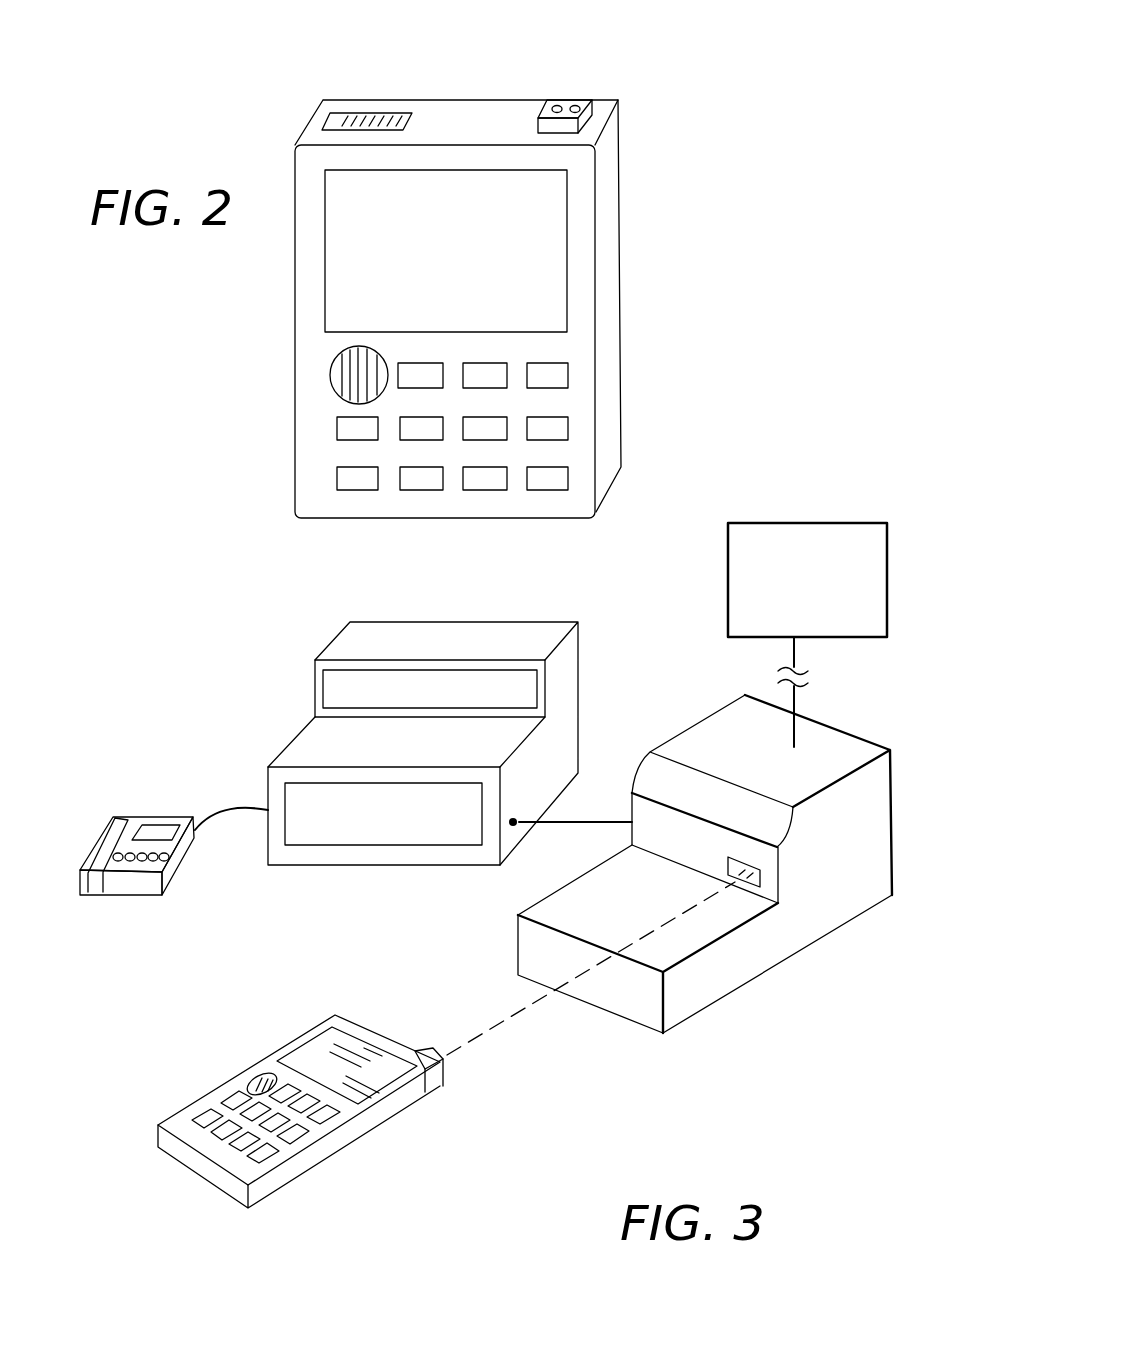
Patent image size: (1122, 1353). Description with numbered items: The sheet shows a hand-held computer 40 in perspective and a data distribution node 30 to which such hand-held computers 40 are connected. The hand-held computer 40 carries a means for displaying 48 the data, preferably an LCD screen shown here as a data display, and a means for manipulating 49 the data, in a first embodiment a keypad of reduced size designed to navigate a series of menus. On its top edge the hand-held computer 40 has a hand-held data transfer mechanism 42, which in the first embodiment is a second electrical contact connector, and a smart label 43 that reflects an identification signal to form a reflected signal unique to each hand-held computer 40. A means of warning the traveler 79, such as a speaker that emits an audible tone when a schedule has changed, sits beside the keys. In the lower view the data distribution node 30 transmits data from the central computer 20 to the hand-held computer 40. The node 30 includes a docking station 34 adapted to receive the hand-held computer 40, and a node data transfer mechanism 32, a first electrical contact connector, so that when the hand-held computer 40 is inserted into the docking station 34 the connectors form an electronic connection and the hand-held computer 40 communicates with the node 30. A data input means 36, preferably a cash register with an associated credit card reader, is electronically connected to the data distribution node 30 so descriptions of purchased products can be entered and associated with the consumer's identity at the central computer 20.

In FIG. 3, the central computer 20 is at (825, 523).
In FIG. 3, the data distribution node 30 is at (736, 864).
In FIG. 3, the node data transfer mechanism 32 is at (755, 886).
In FIG. 3, the docking station 34 is at (697, 910).
In FIG. 3, the data input means 36 is at (267, 853).
In FIG. 2, the hand-held computer 40 is at (702, 204).
In FIG. 3, the hand-held computer 40 is at (377, 1117).
In FIG. 2, the hand-held data transfer mechanism 42 is at (573, 105).
In FIG. 3, the hand-held data transfer mechanism 42 is at (448, 1063).
In FIG. 2, the smart label 43 is at (360, 112).
In FIG. 2, the means for displaying 48 is at (455, 286).
In FIG. 2, the means for manipulating 49 is at (565, 376).
In FIG. 3, the means for manipulating 49 is at (263, 1165).
In FIG. 2, the means of warning the traveler 79 is at (342, 378).
In FIG. 3, the means of warning the traveler 79 is at (255, 1078).